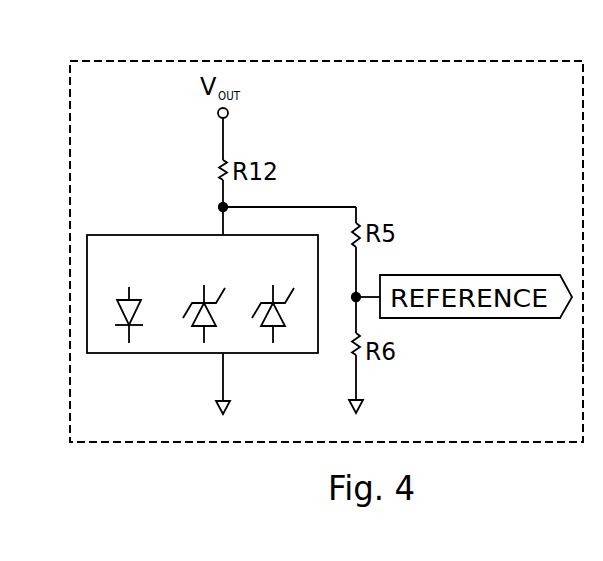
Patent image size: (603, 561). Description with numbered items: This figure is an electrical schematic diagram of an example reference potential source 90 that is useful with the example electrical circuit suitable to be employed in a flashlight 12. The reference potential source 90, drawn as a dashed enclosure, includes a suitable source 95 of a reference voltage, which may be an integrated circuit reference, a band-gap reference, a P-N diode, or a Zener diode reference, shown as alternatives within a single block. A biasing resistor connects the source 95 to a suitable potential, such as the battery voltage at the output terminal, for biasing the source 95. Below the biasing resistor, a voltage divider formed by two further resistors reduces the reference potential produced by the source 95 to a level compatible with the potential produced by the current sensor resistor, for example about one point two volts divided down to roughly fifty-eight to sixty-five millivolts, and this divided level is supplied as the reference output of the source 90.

The reference potential source 90 is at (548, 124).
The source of a reference voltage 95 is at (183, 353).
The flashlight 12 is at (583, 347).